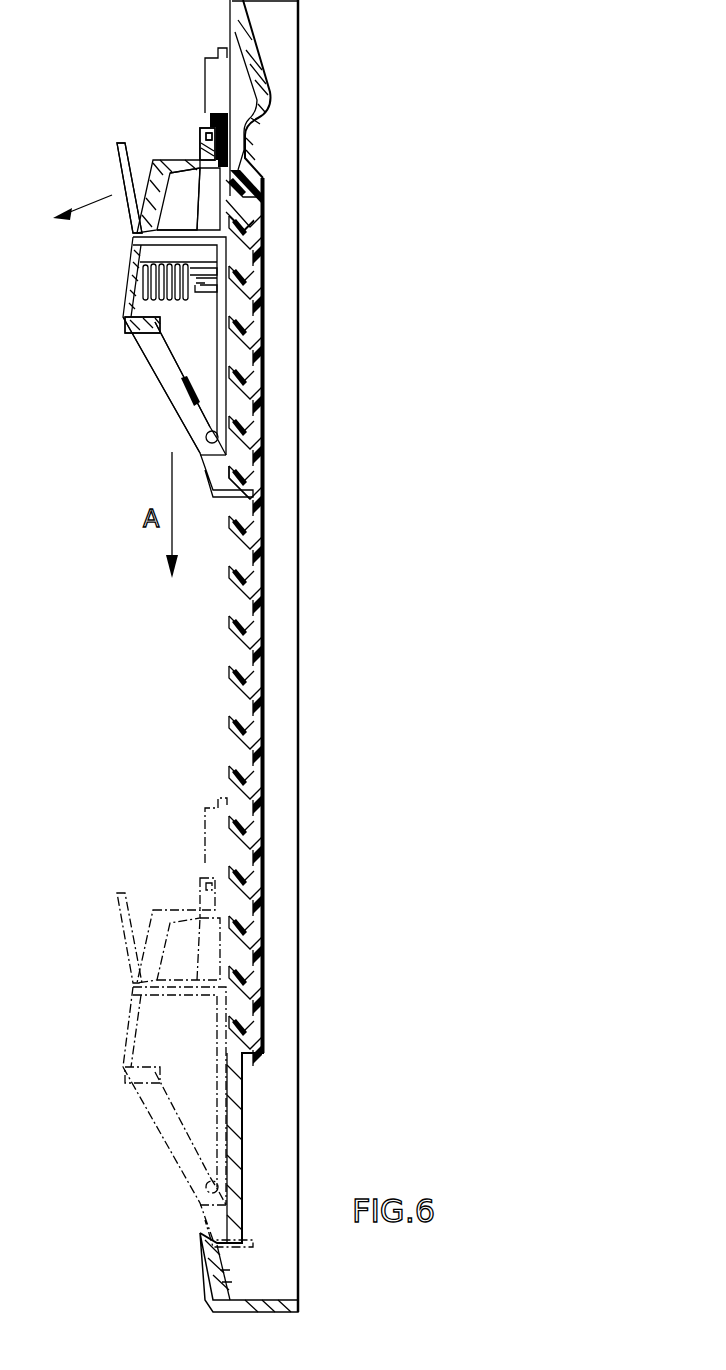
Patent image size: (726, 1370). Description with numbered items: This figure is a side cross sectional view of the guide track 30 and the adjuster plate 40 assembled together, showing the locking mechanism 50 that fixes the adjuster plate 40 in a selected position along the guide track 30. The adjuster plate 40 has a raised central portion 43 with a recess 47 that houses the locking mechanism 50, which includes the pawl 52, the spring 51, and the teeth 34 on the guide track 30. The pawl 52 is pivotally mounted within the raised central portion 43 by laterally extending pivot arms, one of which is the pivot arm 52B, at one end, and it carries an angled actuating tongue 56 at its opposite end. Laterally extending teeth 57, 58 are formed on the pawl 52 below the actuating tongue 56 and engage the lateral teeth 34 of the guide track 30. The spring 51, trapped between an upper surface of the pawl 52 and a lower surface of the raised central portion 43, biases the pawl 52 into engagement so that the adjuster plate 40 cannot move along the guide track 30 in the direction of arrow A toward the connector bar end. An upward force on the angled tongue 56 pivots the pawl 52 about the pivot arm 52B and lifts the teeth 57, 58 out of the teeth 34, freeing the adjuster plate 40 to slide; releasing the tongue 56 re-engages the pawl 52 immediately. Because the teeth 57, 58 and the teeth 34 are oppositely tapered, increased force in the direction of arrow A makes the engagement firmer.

The guide track 30 is at (312, 24).
The teeth 34 is at (262, 360).
The adjuster plate 40 is at (146, 160).
The raised central portion 43 is at (124, 322).
The recess 47 is at (135, 250).
The locking mechanism 50 is at (266, 226).
The spring 51 is at (125, 321).
The pawl 52 is at (222, 176).
The pivot arm 52B is at (262, 474).
The angled actuating tongue 56 is at (118, 152).
The tooth 57 is at (262, 252).
The tooth 58 is at (262, 198).